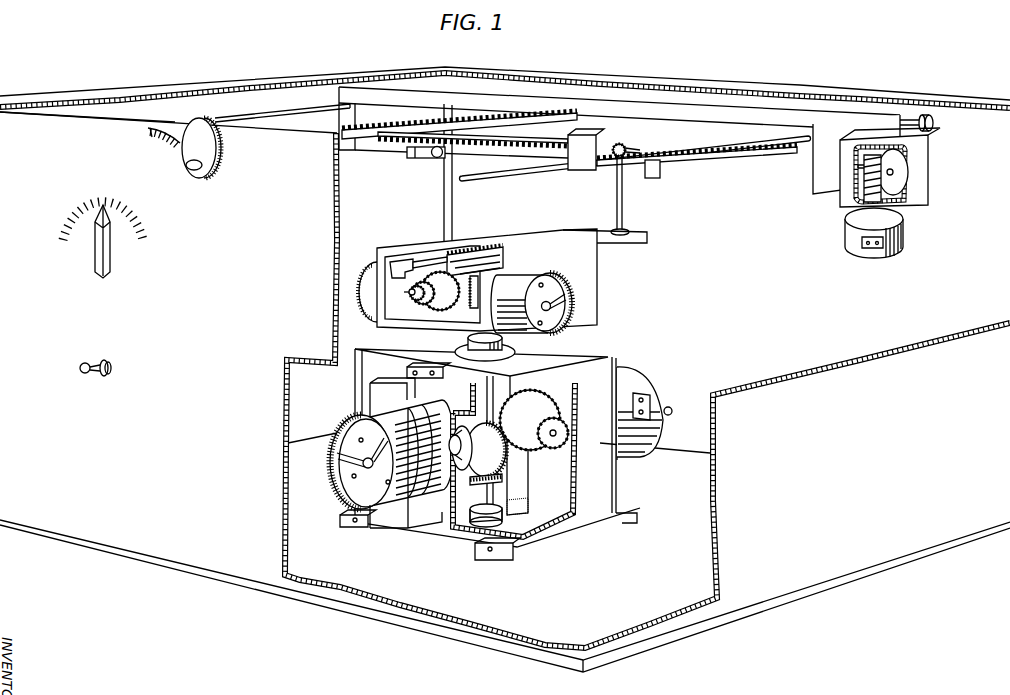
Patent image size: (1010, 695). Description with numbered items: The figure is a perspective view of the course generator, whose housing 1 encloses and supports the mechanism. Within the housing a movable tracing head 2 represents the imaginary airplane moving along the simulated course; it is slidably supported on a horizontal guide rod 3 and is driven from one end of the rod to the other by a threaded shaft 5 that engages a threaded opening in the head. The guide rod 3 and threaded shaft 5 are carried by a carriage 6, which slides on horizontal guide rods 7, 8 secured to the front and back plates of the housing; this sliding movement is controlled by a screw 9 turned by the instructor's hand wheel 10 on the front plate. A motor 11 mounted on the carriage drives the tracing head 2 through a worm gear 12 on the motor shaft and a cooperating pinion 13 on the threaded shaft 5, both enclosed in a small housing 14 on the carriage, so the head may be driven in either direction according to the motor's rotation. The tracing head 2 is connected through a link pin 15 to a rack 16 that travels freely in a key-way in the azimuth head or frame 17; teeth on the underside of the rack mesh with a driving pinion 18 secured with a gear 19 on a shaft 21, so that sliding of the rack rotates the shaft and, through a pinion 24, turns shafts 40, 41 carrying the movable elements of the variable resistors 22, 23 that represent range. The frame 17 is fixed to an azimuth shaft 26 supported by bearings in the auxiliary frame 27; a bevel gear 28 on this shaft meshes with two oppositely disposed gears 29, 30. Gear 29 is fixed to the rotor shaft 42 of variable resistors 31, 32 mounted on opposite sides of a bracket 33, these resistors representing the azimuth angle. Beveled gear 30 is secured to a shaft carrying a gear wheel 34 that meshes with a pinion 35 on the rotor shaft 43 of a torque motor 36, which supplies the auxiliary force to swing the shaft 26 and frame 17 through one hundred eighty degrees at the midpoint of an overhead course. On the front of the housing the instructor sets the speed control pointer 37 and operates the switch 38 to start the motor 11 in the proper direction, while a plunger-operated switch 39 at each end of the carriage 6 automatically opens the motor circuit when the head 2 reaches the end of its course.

The housing 1 is at (928, 346).
The tracing head 2 is at (587, 170).
The horizontal guide rod 3 is at (781, 170).
The threaded shaft 5 is at (543, 144).
The carriage 6 is at (750, 108).
The horizontal guide rod 7 is at (500, 178).
The horizontal guide rod 8 is at (242, 108).
The screw 9 is at (385, 130).
The hand wheel 10 is at (221, 150).
The motor 11 is at (845, 240).
The worm gear 12 is at (853, 196).
The pinion 13 is at (897, 167).
The small housing 14 is at (930, 177).
The link pin 15 is at (626, 205).
The rack 16 is at (630, 236).
The azimuth head or frame 17 is at (598, 300).
The driving pinion 18 is at (470, 305).
The gear 19 is at (429, 303).
The shaft 21 is at (455, 287).
The variable resistor 22 is at (372, 268).
The variable resistor 23 is at (558, 277).
The pinion 24 is at (413, 300).
The azimuth shaft 26 is at (494, 390).
The auxiliary frame 27 is at (357, 384).
The bevel gear 28 is at (508, 475).
The gear 29 is at (462, 466).
The beveled gear 30 is at (495, 458).
The variable resistor 31 is at (388, 512).
The variable resistor 32 is at (426, 497).
The bracket 33 is at (398, 376).
The gear wheel 34 is at (536, 412).
The pinion 35 is at (577, 450).
The torque motor 36 is at (647, 374).
The speed control pointer 37 is at (93, 258).
The switch 38 is at (85, 368).
The plunger-operated switch 39 is at (418, 158).
The shaft 40 is at (408, 293).
The shaft 41 is at (565, 328).
The rotor shaft 42 is at (392, 454).
The rotor shaft 43 is at (671, 406).